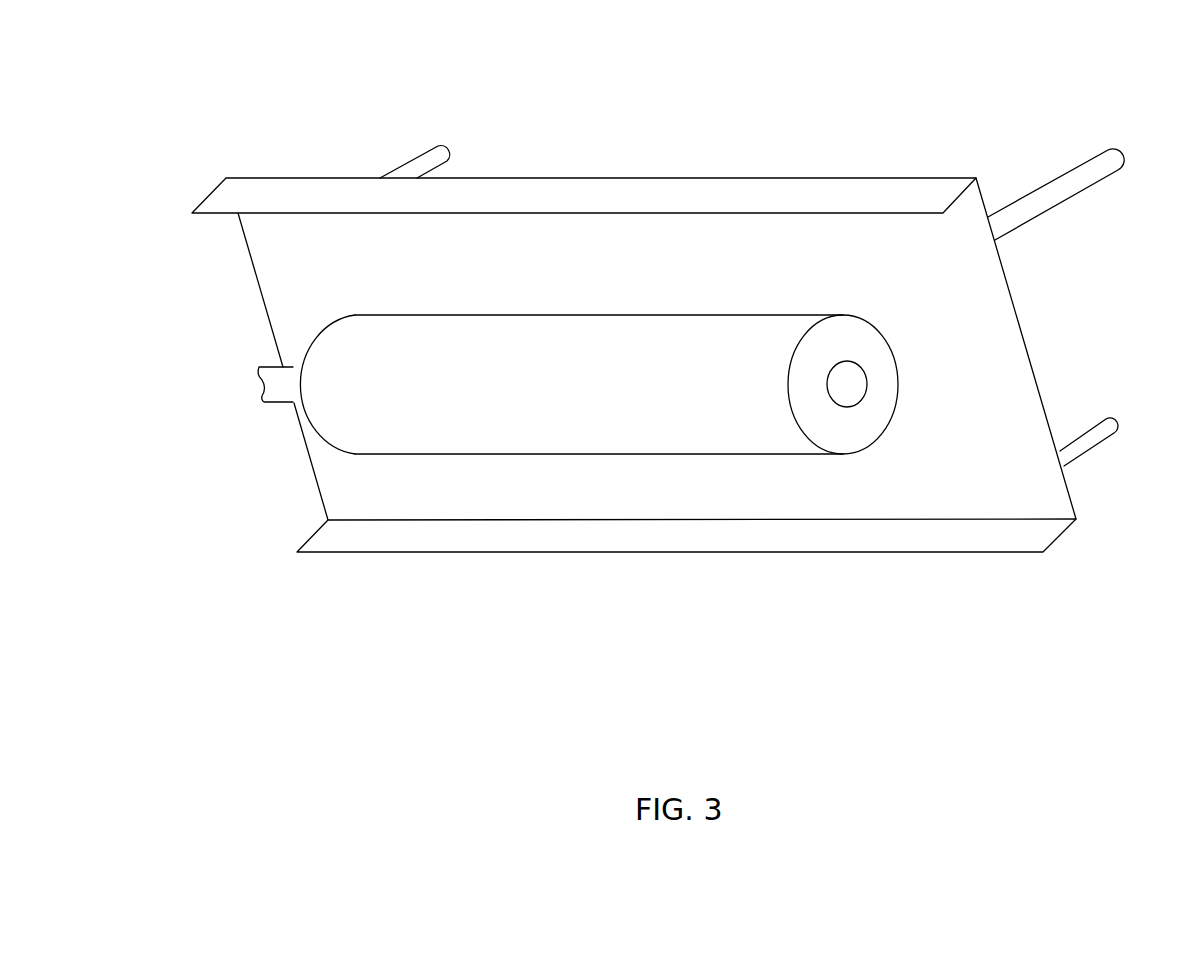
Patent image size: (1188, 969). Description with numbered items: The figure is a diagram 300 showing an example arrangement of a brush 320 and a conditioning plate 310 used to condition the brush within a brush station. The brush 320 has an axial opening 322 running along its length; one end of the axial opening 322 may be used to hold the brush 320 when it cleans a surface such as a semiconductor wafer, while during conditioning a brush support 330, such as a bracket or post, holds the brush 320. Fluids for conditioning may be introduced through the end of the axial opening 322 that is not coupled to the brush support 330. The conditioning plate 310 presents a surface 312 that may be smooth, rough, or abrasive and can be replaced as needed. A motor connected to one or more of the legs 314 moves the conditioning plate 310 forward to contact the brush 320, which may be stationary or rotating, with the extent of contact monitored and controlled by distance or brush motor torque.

The diagram 300 is at (638, 44).
The conditioning plate 310 is at (887, 164).
The surface 312 is at (939, 501).
The legs 314 is at (1043, 166).
The brush 320 is at (499, 469).
The axial opening 322 is at (880, 375).
The brush support 330 is at (261, 412).